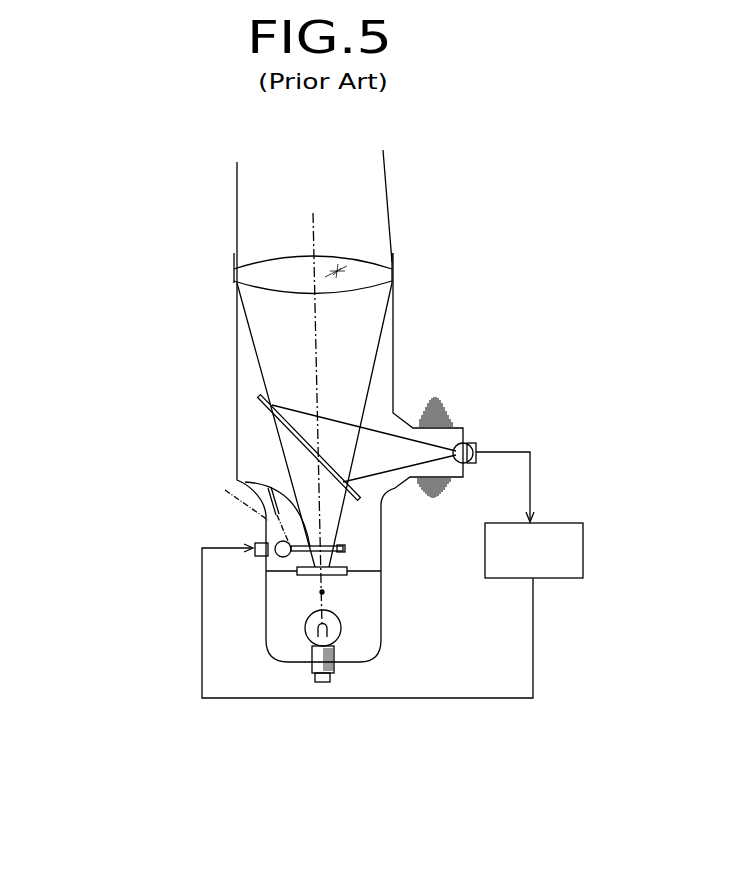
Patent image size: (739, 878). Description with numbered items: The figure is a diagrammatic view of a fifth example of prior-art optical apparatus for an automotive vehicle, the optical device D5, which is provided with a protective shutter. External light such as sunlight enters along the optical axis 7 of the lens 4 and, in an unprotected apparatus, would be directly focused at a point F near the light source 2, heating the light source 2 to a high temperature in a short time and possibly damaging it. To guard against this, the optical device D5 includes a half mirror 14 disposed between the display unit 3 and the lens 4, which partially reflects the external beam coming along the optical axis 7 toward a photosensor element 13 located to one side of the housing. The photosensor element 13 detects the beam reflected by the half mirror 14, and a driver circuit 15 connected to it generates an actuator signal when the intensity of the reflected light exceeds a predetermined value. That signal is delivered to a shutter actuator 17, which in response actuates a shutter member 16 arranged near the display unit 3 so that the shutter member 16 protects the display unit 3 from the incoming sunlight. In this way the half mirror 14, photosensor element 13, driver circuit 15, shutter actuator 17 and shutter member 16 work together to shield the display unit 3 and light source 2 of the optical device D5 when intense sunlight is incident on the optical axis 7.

The optical device D5 is at (127, 366).
The lens 4 is at (250, 277).
The optical axis 7 is at (318, 338).
The half mirror 14 is at (280, 427).
The photosensor element 13 is at (470, 442).
The driver circuit 15 is at (584, 541).
The shutter member 16 is at (245, 483).
The shutter actuator 17 is at (254, 544).
The display unit 3 is at (347, 573).
The focal point F is at (320, 592).
The light source 2 is at (330, 667).